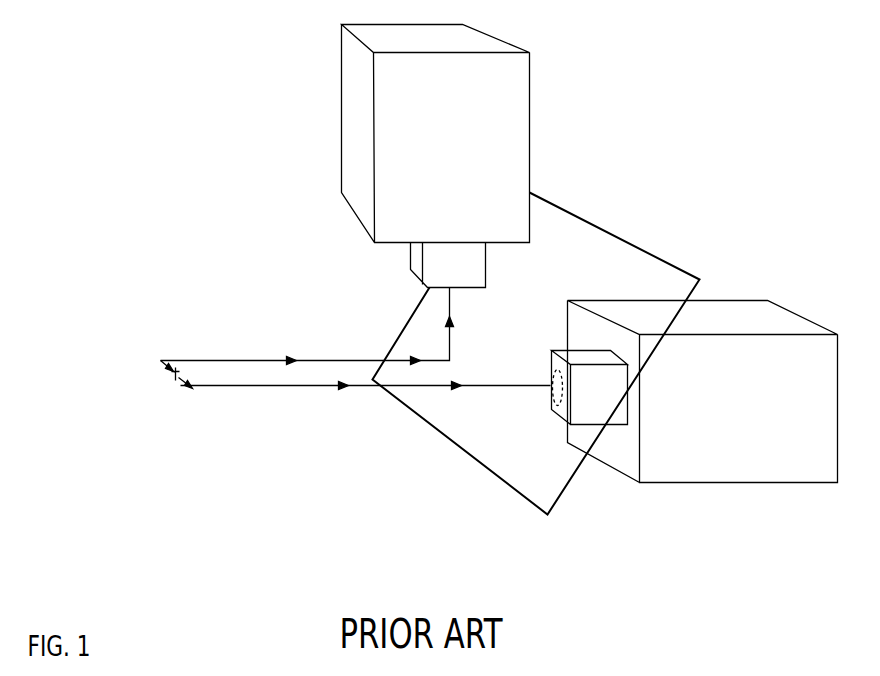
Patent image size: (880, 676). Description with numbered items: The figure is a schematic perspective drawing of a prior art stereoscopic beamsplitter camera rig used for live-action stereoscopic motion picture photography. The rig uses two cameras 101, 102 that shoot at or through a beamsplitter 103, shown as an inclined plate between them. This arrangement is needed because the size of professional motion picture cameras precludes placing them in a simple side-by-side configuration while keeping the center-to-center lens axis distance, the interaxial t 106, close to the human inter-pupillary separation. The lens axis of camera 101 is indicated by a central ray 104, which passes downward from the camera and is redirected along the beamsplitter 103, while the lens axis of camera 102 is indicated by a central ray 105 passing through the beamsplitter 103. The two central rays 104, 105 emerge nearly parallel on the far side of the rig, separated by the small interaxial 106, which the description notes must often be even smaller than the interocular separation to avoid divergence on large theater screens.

The camera 101 is at (538, 143).
The camera 102 is at (727, 288).
The beamsplitter 103 is at (452, 460).
The central ray 104 is at (255, 347).
The central ray 105 is at (300, 395).
The interaxial 106 is at (162, 383).